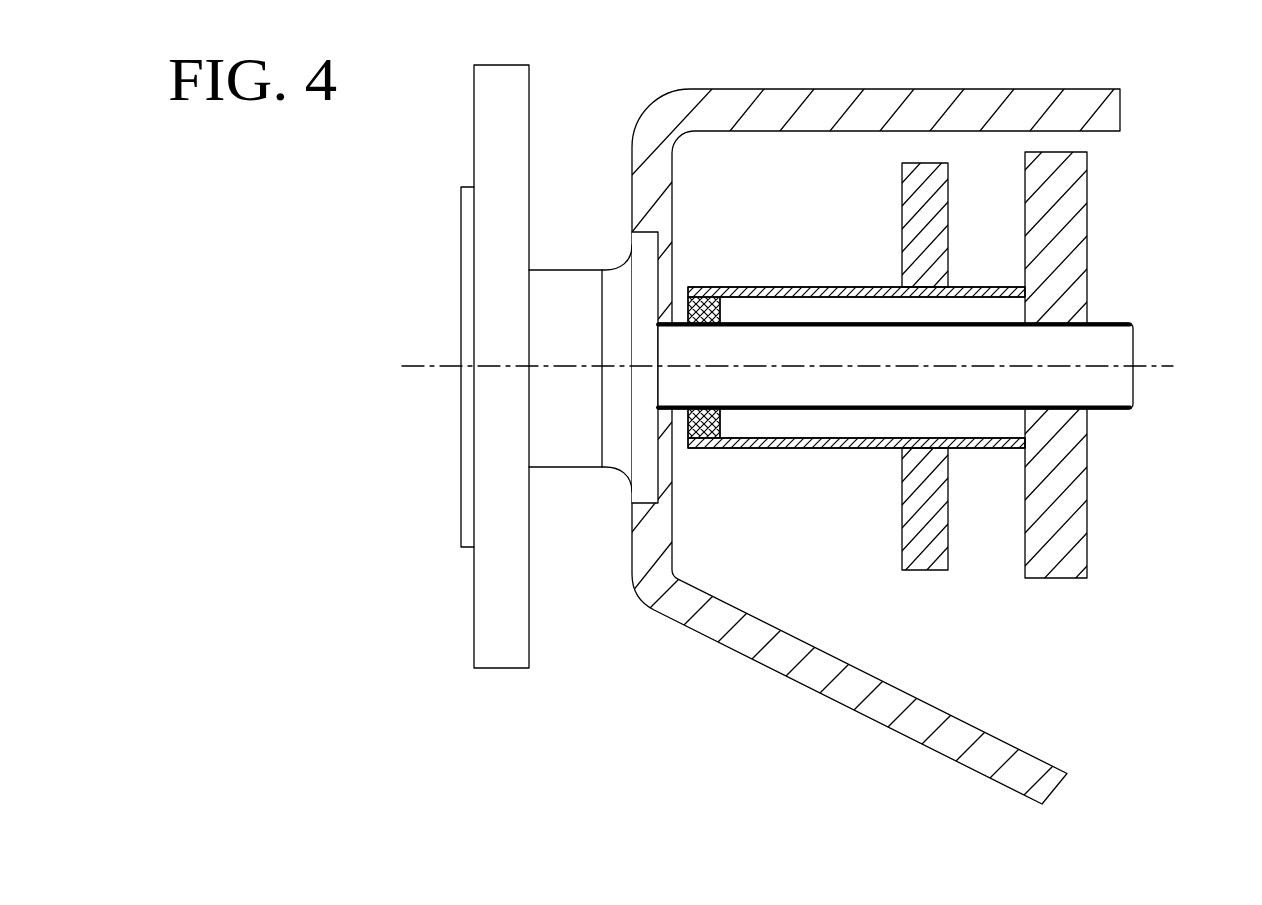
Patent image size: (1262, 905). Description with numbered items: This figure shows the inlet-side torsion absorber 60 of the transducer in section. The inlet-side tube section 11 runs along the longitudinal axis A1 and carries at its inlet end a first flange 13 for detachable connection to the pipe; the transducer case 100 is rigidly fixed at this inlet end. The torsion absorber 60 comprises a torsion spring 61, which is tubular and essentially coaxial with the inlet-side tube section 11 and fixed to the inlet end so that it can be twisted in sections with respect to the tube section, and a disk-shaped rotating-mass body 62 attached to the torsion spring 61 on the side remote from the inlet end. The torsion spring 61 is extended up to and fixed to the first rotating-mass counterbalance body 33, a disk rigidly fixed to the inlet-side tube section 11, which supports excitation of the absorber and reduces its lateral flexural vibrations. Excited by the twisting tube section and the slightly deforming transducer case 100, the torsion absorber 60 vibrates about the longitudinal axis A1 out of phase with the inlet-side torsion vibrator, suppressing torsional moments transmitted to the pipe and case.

The transducer case 100 is at (797, 404).
The first torsion absorber 60 is at (1005, 610).
The first flange 13 is at (500, 655).
The torsion spring 61 is at (852, 448).
The rotating-mass body 62 is at (900, 540).
The first rotating-mass counterbalance body 33 is at (1088, 190).
The inlet-side tube section 11 is at (1108, 388).
The longitudinal axis A1 is at (760, 359).